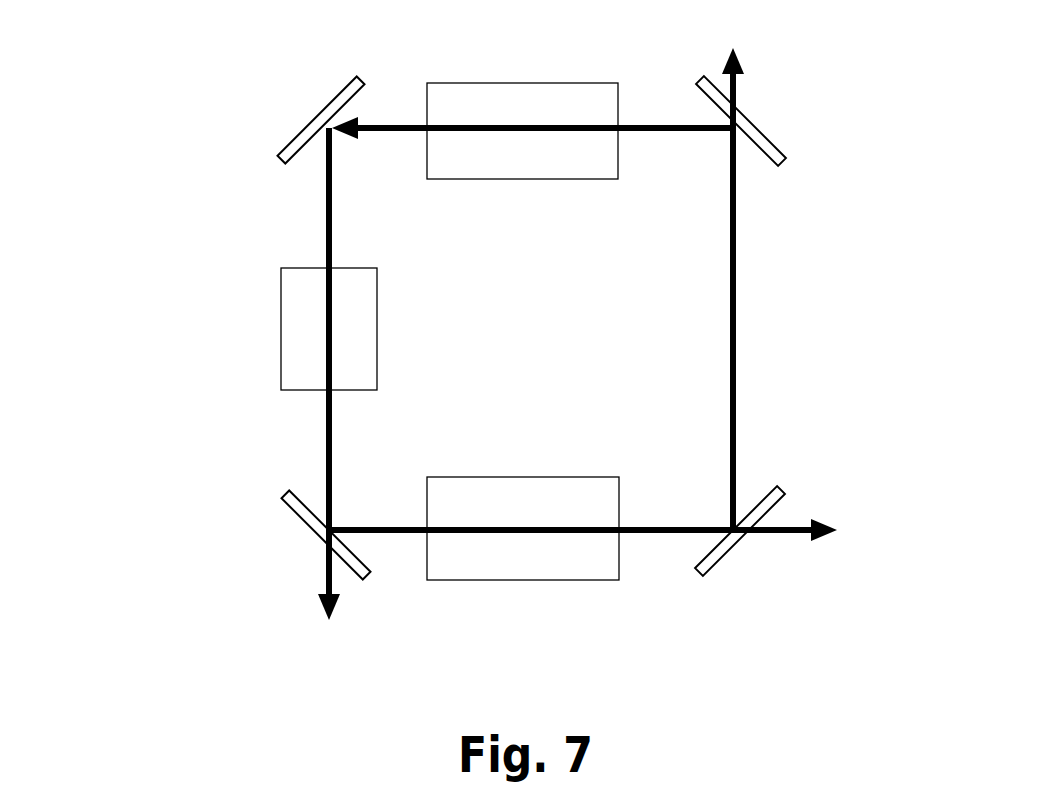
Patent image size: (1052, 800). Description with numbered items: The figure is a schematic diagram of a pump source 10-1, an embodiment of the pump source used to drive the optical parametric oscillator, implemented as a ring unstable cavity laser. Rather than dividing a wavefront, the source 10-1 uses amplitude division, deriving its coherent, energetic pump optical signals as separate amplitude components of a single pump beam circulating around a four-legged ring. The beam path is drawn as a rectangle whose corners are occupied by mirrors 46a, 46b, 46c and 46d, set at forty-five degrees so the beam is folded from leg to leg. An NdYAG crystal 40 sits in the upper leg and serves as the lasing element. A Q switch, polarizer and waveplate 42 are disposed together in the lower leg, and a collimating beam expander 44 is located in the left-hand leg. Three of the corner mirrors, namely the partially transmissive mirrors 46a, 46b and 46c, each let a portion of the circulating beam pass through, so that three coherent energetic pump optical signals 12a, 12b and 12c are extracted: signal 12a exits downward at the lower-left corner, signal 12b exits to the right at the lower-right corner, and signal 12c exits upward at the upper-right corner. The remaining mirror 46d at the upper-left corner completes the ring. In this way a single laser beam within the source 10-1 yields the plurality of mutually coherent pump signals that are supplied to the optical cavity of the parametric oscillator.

The pump source 10-1 is at (178, 88).
The NdYAG crystal 40 is at (522, 83).
The Q switch, polarizer and waveplate 42 is at (523, 580).
The collimating beam expander 44 is at (281, 328).
The partially transmissive mirror 46a is at (285, 492).
The partially transmissive mirror 46b is at (718, 567).
The partially transmissive mirror 46c is at (782, 163).
The mirror 46d is at (280, 165).
The energetic pump optical signal 12a is at (325, 618).
The energetic pump optical signal 12b is at (825, 520).
The energetic pump optical signal 12c is at (742, 57).